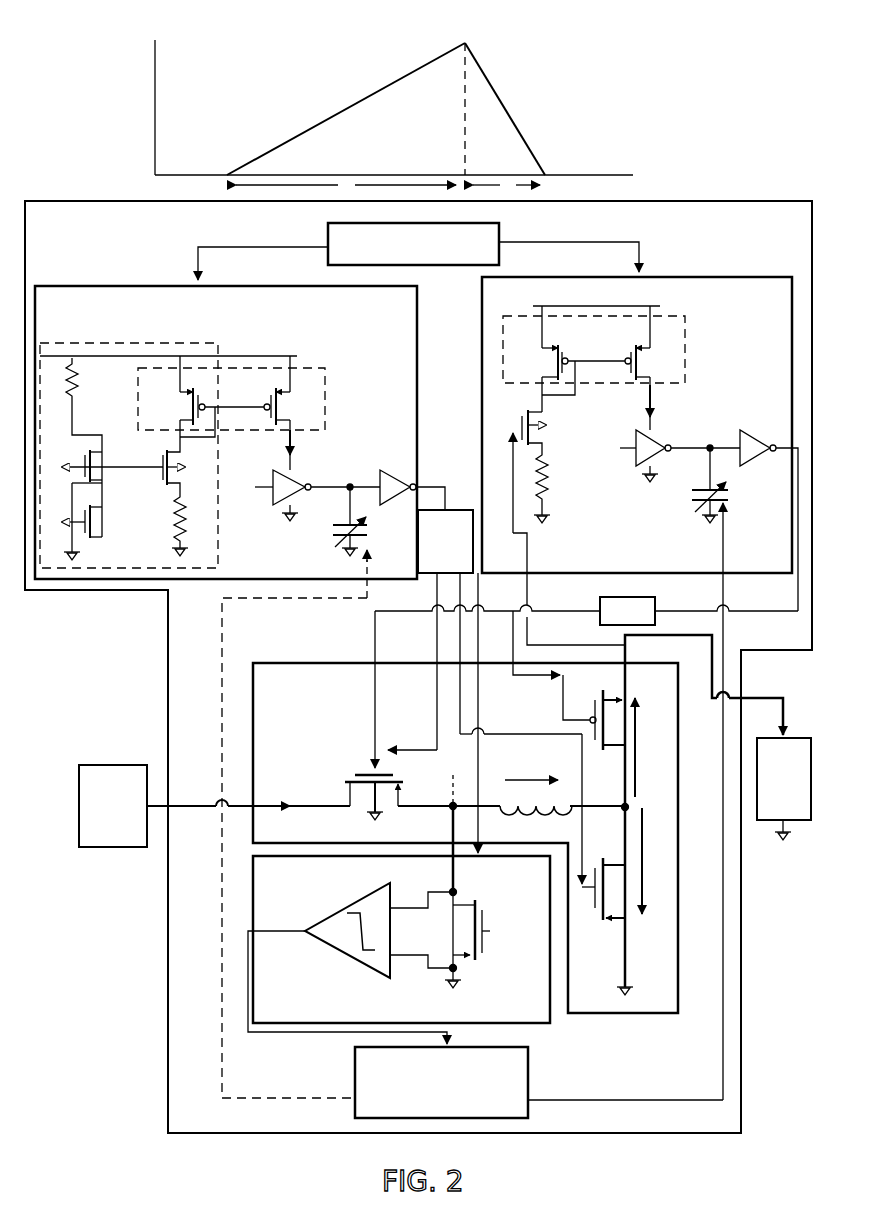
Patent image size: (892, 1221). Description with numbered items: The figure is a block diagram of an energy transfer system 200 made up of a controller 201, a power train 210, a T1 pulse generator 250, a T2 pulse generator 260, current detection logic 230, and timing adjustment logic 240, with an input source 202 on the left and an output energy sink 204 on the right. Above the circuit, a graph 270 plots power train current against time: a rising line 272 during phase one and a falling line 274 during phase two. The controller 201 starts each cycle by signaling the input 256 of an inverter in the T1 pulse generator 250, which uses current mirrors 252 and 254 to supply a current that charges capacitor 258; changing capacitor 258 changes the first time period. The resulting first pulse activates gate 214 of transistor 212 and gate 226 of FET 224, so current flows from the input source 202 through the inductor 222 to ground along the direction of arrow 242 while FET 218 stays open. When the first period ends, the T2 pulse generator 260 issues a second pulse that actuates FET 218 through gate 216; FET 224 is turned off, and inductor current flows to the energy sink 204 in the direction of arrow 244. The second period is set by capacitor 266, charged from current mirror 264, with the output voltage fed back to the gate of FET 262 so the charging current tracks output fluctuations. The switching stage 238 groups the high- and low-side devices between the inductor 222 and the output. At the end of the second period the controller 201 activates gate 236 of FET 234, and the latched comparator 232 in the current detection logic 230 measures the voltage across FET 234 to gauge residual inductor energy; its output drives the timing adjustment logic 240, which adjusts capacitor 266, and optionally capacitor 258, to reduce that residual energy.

The system 200 is at (418, 667).
The controller 201 is at (418, 251).
The input source 202 is at (113, 806).
The energy sink 204 is at (784, 789).
The power train 210 is at (412, 838).
The transistor 212 is at (404, 786).
The gate 214 is at (327, 746).
The gate 216 is at (559, 720).
The FET 218 is at (592, 680).
The inductor 222 is at (525, 797).
The FET 224 is at (598, 910).
The gate 226 is at (552, 846).
The current detection logic 230 is at (399, 950).
The latched comparator 232 is at (367, 920).
The FET 234 is at (494, 920).
The gate 236 is at (515, 922).
The output switch stage 238 is at (712, 815).
The timing adjustment logic 240 is at (441, 1082).
The arrow 242 is at (684, 861).
The arrow 244 is at (675, 747).
The T1 pulse generator 250 is at (315, 586).
The current mirror 252 is at (129, 437).
The current mirror 254 is at (270, 397).
The input of an inverter 256 is at (269, 497).
The capacitor 258 is at (294, 794).
The T2 pulse generator 260 is at (586, 522).
The FET 262 is at (485, 618).
The current mirror 264 is at (632, 346).
The capacitor 266 is at (628, 775).
The graph 270 is at (380, 117).
The line 272 is at (346, 109).
The line 274 is at (528, 109).